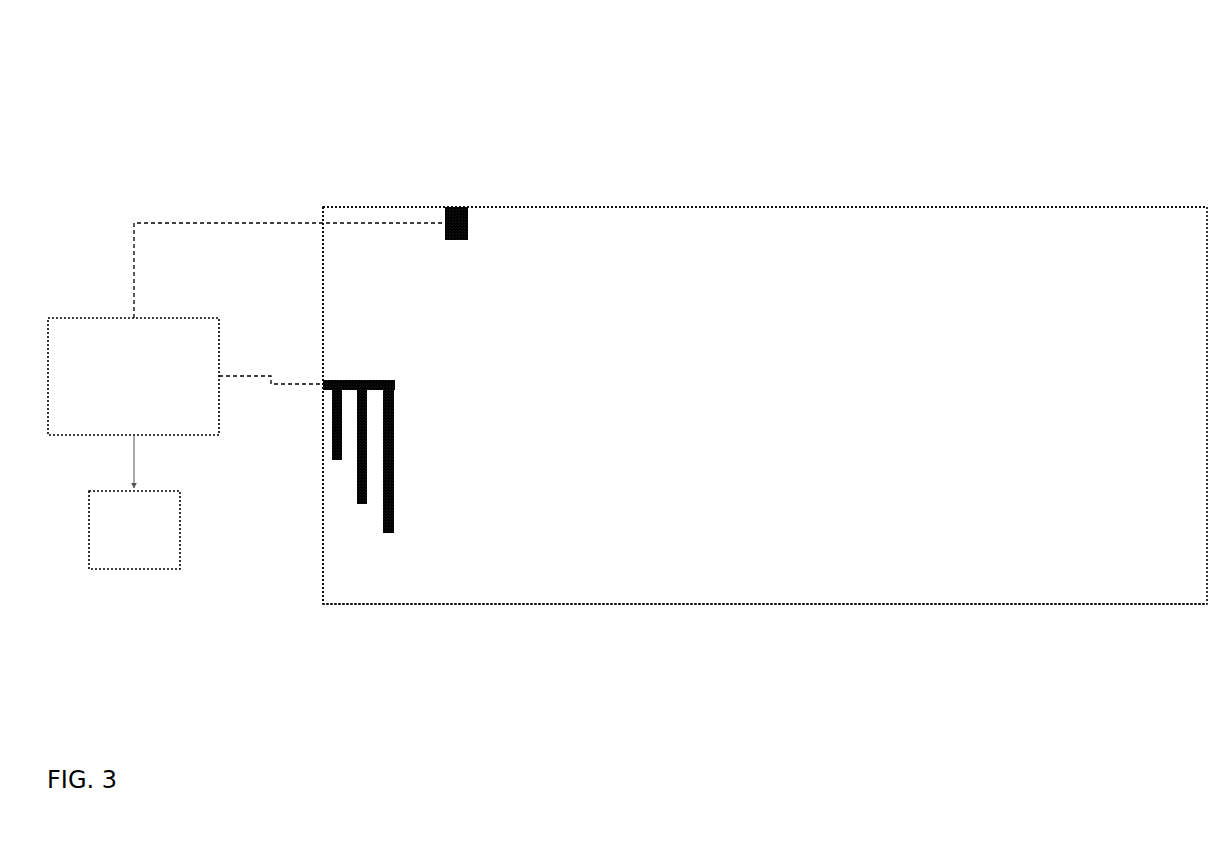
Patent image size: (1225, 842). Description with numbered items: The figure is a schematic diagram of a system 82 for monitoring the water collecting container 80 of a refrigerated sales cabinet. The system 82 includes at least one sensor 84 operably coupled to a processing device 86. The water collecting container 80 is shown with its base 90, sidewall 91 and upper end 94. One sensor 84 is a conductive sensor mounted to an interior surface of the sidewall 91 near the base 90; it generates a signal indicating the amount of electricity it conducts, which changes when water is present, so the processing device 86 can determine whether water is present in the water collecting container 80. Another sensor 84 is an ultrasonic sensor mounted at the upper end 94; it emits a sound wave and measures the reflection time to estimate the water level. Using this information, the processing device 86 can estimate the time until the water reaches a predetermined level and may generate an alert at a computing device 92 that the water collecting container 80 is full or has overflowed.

The water collecting container 80 is at (765, 405).
The system 82 is at (150, 136).
The sensor 84 is at (268, 540).
The processing device 86 is at (246, 329).
The base 90 is at (463, 604).
The sidewall 91 is at (323, 592).
The computing device 92 is at (134, 502).
The upper end 94 is at (361, 207).